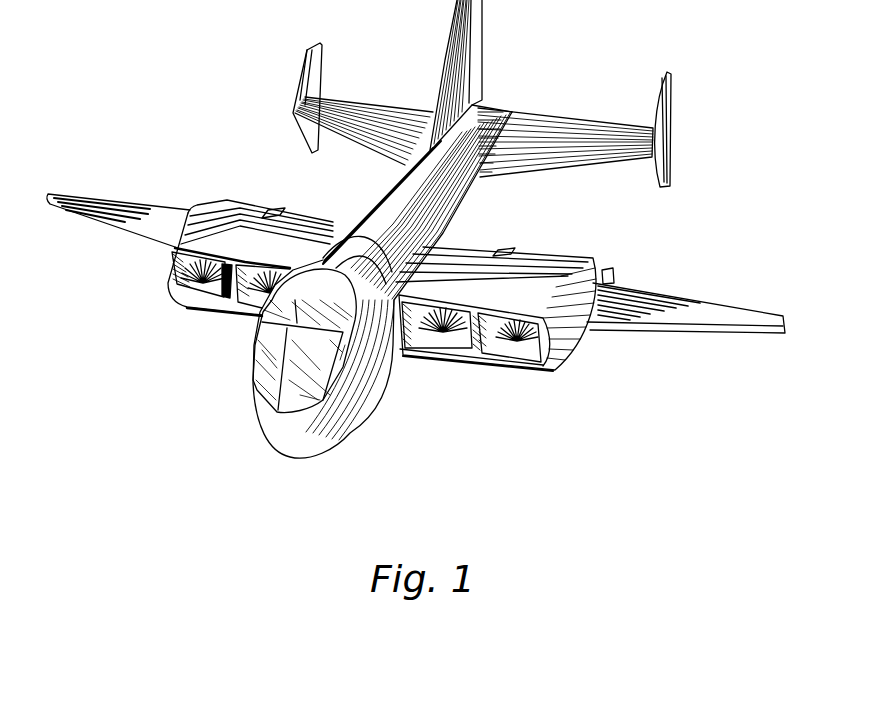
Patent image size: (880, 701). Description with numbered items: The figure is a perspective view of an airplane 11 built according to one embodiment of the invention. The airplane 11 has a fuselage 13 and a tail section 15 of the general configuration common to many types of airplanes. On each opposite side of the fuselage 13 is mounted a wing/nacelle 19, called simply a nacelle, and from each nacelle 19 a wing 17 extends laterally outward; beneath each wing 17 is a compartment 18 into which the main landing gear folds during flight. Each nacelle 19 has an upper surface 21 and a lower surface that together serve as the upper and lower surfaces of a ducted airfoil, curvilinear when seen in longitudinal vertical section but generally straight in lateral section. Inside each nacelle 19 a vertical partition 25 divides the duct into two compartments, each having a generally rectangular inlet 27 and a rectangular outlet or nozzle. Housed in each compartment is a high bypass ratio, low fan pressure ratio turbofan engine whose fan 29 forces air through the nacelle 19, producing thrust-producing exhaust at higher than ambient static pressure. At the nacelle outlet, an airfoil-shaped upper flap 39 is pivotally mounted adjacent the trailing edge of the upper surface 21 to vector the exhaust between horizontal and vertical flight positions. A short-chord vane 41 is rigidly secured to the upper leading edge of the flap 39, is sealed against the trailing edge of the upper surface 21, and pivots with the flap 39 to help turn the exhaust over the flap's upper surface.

The airplane 11 is at (209, 105).
The fuselage 13 is at (387, 380).
The tail section 15 is at (617, 163).
The wing 17 is at (703, 333).
The compartment 18 is at (608, 278).
The wing/nacelle 19 is at (589, 357).
The upper surface 21 is at (484, 327).
The vertical partition 25 is at (223, 307).
The inlet 27 is at (182, 300).
The fan 29 is at (515, 330).
The upper flap 39 is at (530, 260).
The vane 41 is at (470, 253).